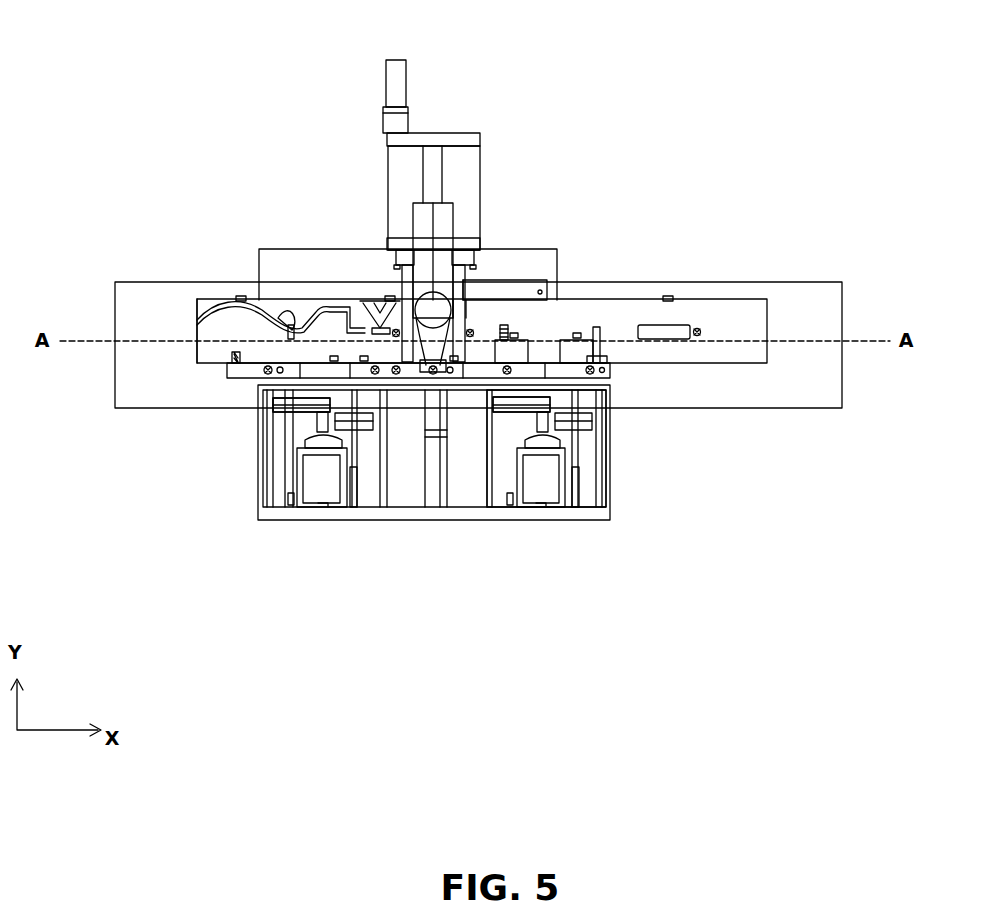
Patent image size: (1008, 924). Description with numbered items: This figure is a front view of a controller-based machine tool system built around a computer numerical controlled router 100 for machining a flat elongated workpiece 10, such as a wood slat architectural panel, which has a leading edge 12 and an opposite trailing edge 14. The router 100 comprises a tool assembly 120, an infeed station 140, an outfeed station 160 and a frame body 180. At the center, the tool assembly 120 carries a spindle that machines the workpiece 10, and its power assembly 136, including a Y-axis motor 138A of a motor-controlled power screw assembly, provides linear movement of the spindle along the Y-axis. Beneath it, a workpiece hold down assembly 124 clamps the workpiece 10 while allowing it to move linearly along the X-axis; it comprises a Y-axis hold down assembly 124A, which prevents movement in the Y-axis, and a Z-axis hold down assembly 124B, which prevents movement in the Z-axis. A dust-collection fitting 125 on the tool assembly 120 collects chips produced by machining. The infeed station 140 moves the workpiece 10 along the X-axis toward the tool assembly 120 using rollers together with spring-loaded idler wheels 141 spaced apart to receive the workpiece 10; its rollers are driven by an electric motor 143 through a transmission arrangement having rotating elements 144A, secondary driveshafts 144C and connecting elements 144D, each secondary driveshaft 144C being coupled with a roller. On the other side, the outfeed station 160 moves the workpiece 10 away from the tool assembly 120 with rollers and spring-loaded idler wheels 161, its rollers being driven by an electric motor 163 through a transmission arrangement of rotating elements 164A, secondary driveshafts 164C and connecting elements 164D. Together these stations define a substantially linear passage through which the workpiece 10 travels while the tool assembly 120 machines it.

The flat elongated workpiece 10 is at (194, 330).
The leading edge 12 is at (180, 323).
The trailing edge 14 is at (765, 330).
The computer numerical controlled (CNC) router 100 is at (677, 124).
The tool assembly 120 is at (464, 166).
The workpiece hold down assembly 124 is at (523, 297).
The Y-axis hold down assembly 124A is at (523, 297).
The Z-axis hold down assembly 124B is at (460, 313).
The dust-collection fitting 125 is at (423, 255).
The power assembly 136 is at (401, 96).
The Y-axis motor 138A is at (386, 75).
The infeed station 140 is at (598, 429).
The spring-loaded idler wheels 141 is at (488, 352).
The electric motor 143 is at (553, 490).
The rotating elements 144A is at (522, 410).
The secondary driveshafts 144C is at (510, 495).
The connecting elements 144D is at (518, 405).
The outfeed station 160 is at (292, 389).
The spring-loaded idler wheels 161 is at (287, 342).
The electric motor 163 is at (325, 490).
The rotating elements 164A is at (298, 412).
The secondary driveshafts 164C is at (292, 495).
The connecting elements 164D is at (296, 405).
The frame body 180 is at (325, 265).